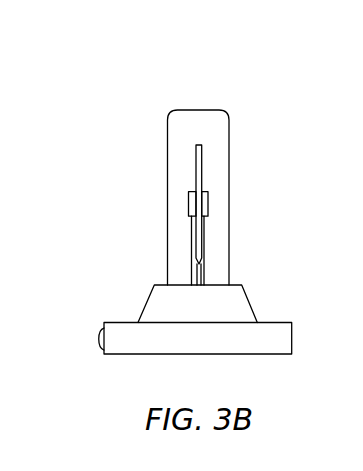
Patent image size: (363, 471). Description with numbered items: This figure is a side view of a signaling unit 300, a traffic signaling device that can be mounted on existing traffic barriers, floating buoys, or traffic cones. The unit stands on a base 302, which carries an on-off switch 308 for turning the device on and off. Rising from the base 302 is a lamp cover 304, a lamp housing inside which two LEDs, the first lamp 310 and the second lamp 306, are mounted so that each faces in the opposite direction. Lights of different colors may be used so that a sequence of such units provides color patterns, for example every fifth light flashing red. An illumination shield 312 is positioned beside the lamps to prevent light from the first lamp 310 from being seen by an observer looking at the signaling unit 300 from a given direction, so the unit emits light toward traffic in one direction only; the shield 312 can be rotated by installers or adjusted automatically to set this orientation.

The signaling unit 300 is at (339, 242).
The base 302 is at (158, 332).
The lamp cover 304 is at (180, 183).
The second lamp 306 is at (207, 201).
The on-off switch 308 is at (102, 343).
The first lamp 310 is at (192, 208).
The illumination shield 312 is at (202, 163).